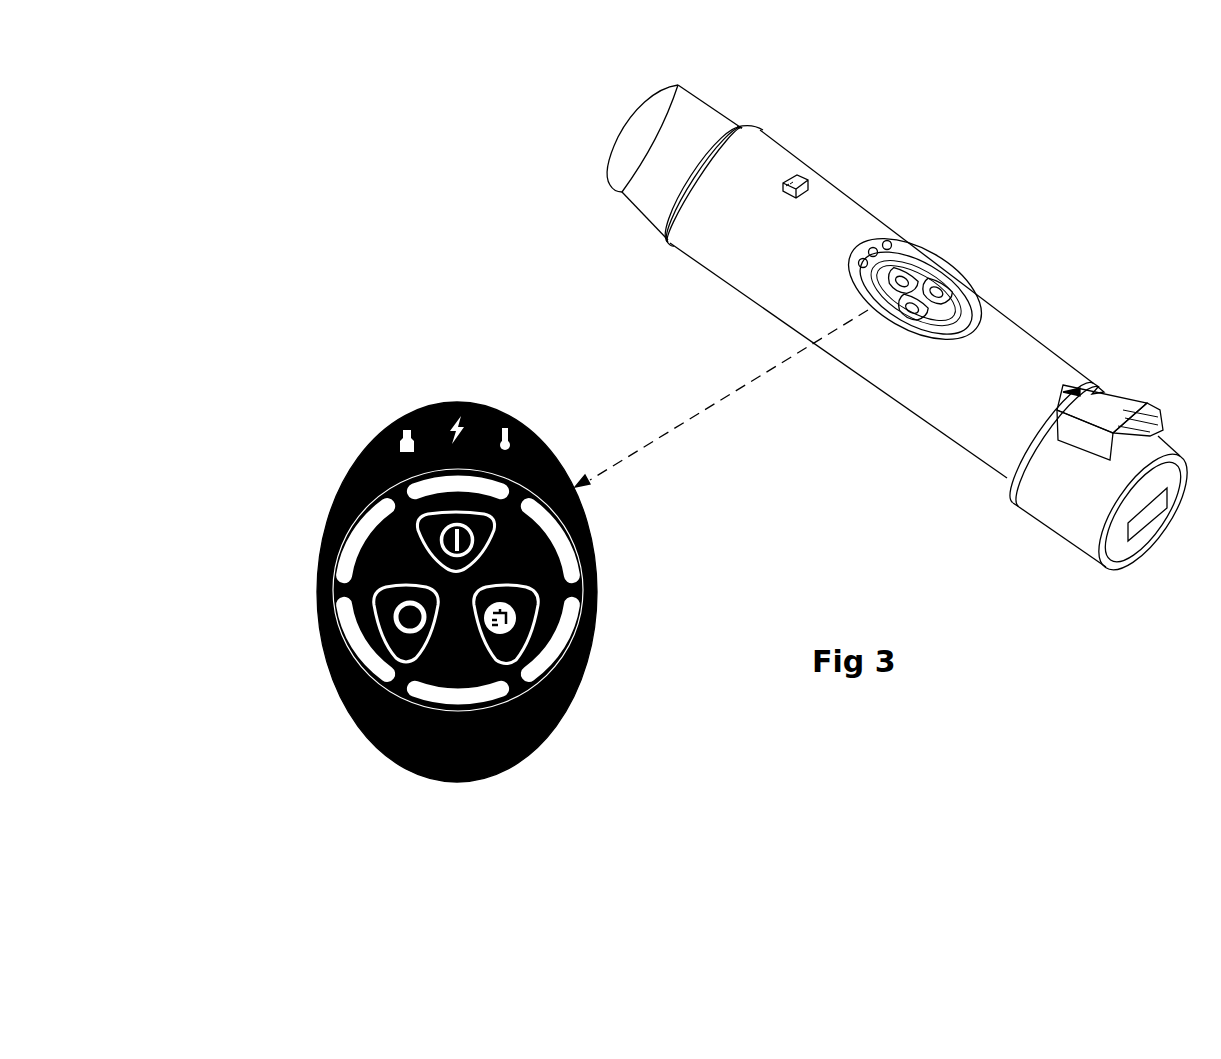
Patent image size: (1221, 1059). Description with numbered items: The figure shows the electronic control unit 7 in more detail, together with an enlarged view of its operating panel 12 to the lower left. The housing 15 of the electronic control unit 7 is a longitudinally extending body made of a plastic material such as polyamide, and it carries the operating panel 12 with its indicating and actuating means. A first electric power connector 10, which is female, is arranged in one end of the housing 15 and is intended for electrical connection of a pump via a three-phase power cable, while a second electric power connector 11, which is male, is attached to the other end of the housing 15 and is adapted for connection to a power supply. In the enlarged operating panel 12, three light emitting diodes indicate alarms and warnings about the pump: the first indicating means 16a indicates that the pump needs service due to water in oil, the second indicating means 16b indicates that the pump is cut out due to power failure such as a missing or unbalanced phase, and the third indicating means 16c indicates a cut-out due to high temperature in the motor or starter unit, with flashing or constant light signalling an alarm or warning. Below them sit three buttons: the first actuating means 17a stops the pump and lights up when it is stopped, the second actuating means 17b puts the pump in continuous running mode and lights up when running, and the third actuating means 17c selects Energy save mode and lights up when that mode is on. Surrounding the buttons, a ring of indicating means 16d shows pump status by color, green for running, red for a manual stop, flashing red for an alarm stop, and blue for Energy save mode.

The electronic control unit 7 is at (1082, 271).
The first electric power connector 10 is at (1047, 505).
The second electric power connector 11 is at (705, 115).
The operating panel 12 is at (908, 252).
The housing 15 is at (818, 200).
The first indicating means (light emitting diode) 16a is at (388, 430).
The second indicating means (light emitting diode) 16b is at (437, 402).
The third indicating means (light emitting diode) 16c is at (507, 417).
The ring of indicating means 16d is at (570, 534).
The first actuating means 17a is at (428, 535).
The second actuating means 17b is at (383, 617).
The third actuating means 17c is at (518, 602).